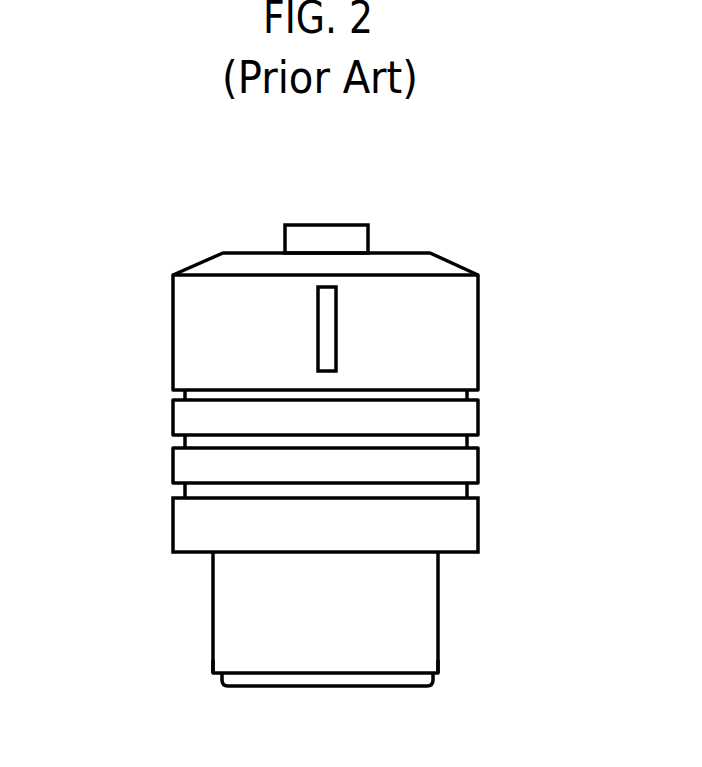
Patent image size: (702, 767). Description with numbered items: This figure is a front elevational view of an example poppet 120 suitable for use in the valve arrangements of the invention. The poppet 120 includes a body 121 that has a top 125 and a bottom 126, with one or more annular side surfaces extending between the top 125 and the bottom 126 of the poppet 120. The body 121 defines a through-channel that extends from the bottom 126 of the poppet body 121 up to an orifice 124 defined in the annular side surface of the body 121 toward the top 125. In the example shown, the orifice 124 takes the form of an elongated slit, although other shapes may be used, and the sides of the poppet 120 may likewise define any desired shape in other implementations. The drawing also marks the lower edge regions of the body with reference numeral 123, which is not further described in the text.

The poppet 120 is at (440, 243).
The body 121 is at (271, 525).
The bottom corner edges 123 is at (319, 690).
The orifice 124 is at (285, 307).
The top 125 is at (355, 201).
The bottom 126 is at (327, 715).